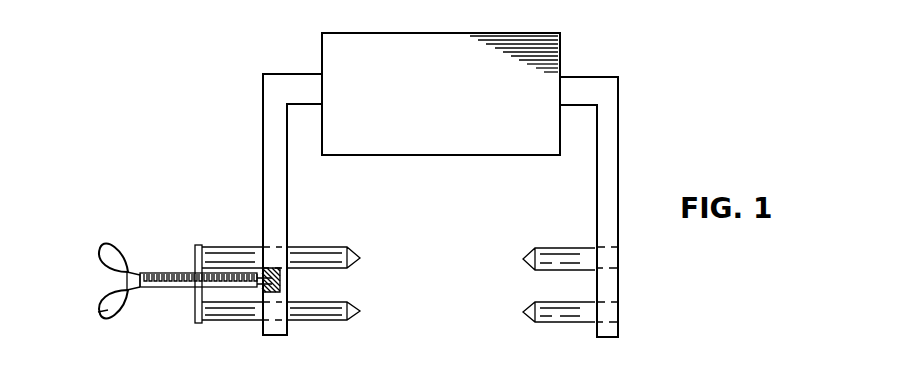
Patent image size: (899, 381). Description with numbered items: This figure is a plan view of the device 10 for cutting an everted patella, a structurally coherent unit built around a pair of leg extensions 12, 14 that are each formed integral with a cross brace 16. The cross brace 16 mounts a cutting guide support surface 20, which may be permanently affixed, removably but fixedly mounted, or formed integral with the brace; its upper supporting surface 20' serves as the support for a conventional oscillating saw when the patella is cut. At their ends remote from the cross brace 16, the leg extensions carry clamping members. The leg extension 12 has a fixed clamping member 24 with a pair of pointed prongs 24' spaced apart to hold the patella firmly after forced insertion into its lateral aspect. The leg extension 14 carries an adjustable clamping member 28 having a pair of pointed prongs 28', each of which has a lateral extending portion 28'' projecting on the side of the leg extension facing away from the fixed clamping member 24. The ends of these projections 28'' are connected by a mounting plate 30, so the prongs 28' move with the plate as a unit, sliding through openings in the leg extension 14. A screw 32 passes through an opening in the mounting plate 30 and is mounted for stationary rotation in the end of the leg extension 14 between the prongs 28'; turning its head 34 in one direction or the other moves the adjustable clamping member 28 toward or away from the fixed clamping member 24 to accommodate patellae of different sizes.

The device for cutting an everted patella 10 is at (648, 122).
The leg extension 12 is at (606, 171).
The leg extension 14 is at (277, 141).
The cross brace 16 is at (302, 80).
The cutting guide support surface 20 is at (469, 82).
The upper supporting surface 20' is at (441, 94).
The fixed clamping member 24 is at (563, 257).
The pointed prongs 24' is at (525, 295).
The adjustable clamping member 28 is at (277, 257).
The pointed prongs 28' is at (354, 283).
The lateral extending portion 28'' is at (223, 281).
The mounting plate 30 is at (190, 306).
The screw 32 is at (165, 252).
The head 34 is at (95, 312).